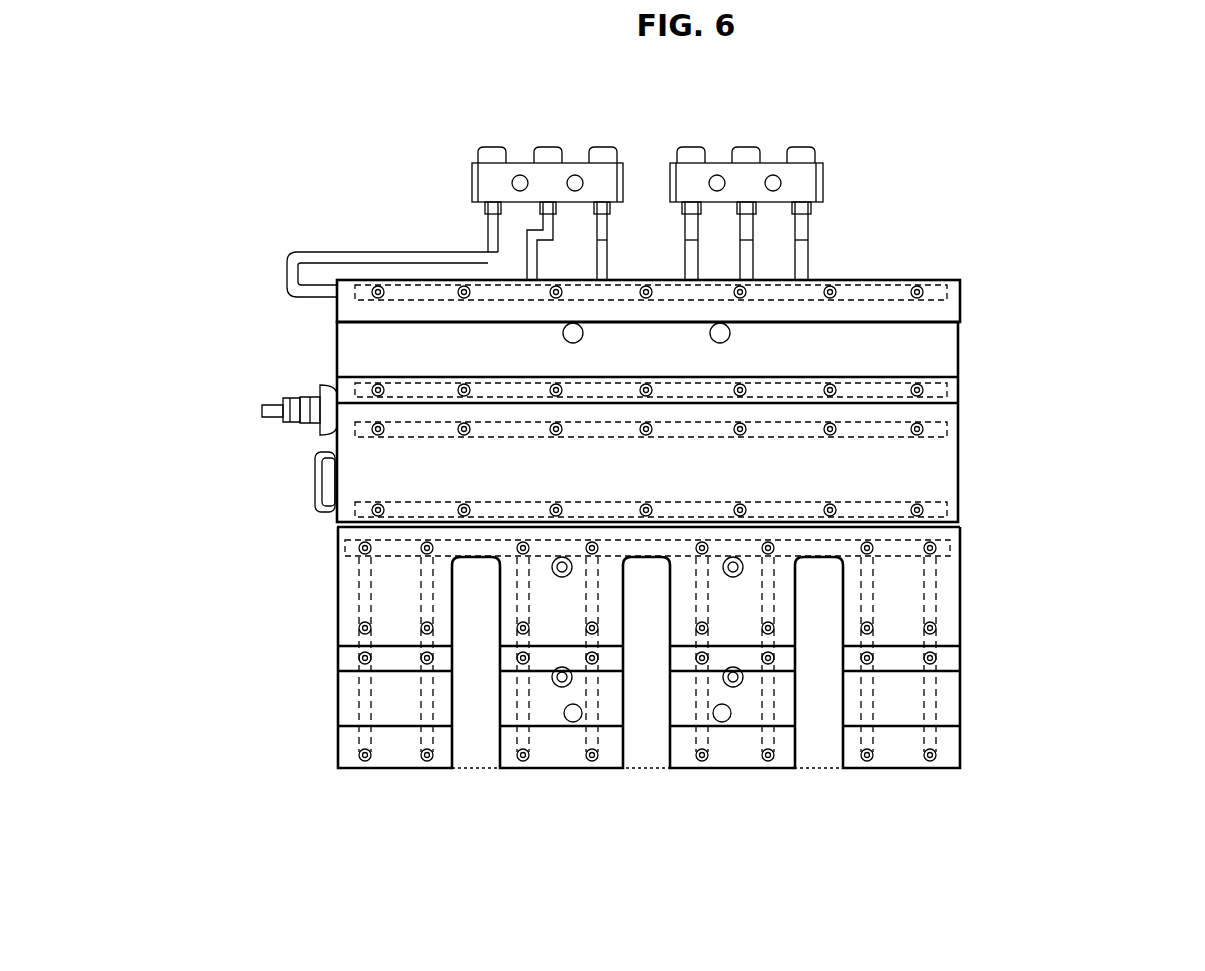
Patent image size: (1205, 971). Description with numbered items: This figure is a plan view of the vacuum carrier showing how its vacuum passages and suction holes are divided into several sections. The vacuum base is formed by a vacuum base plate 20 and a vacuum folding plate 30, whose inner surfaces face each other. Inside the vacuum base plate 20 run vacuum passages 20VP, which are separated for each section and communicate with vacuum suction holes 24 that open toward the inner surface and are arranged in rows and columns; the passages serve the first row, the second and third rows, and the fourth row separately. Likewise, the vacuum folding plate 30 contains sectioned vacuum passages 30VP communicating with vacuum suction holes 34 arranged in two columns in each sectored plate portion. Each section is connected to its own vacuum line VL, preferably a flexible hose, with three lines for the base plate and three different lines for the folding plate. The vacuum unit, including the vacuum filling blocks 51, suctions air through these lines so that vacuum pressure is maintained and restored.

The vacuum base plate 20 is at (328, 778).
The vacuum passages 20VP is at (358, 712).
The vacuum suction holes 24 is at (350, 547).
The vacuum folding plate 30 is at (967, 312).
The vacuum passages 30VP is at (880, 288).
The vacuum suction holes 34 is at (377, 293).
The vacuum filling blocks 51 is at (472, 178).
The vacuum lines VL is at (487, 238).